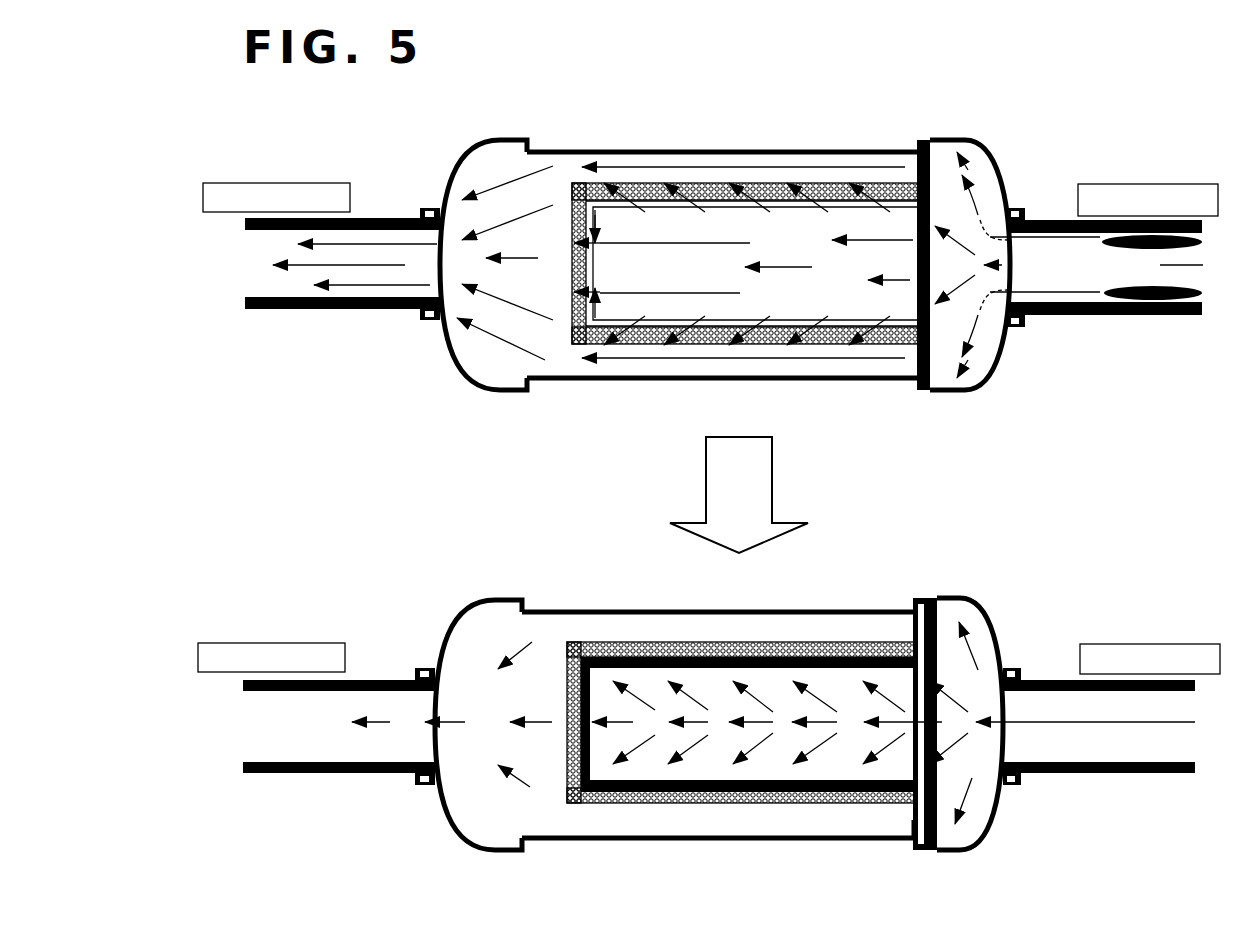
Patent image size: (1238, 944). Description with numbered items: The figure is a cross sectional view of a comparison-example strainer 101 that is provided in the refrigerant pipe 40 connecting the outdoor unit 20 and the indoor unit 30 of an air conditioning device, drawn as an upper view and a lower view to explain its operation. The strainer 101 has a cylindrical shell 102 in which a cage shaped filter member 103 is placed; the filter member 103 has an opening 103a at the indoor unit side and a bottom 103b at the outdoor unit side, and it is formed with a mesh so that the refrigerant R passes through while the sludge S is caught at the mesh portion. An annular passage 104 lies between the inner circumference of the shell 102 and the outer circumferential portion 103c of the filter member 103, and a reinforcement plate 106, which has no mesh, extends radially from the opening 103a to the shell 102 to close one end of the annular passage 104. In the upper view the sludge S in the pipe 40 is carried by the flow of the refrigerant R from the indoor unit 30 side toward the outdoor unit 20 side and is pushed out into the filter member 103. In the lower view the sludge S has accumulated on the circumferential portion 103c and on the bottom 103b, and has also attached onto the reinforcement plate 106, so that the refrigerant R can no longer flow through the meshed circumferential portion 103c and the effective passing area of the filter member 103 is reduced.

The strainer 101 is at (1147, 48).
The cylindrical shell 102 is at (703, 150).
The cage shaped filter member 103 is at (805, 185).
The opening 103a is at (912, 258).
The bottom 103b is at (582, 262).
The circumferential portion 103c is at (776, 190).
The annular passage 104 is at (897, 165).
The reinforcement plate 106 is at (918, 380).
The outdoor unit 20 is at (287, 181).
The indoor unit 30 is at (1146, 184).
The refrigerant pipe 40 is at (372, 218).
The refrigerant R is at (1075, 745).
The sludge S is at (1205, 293).